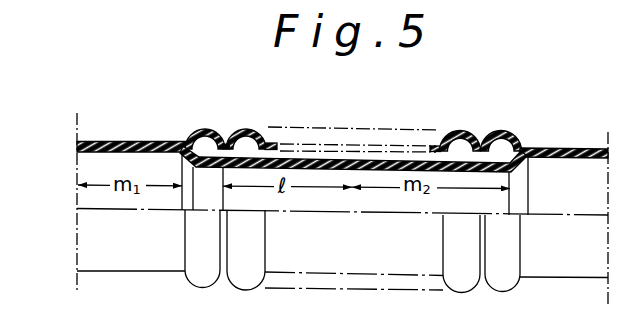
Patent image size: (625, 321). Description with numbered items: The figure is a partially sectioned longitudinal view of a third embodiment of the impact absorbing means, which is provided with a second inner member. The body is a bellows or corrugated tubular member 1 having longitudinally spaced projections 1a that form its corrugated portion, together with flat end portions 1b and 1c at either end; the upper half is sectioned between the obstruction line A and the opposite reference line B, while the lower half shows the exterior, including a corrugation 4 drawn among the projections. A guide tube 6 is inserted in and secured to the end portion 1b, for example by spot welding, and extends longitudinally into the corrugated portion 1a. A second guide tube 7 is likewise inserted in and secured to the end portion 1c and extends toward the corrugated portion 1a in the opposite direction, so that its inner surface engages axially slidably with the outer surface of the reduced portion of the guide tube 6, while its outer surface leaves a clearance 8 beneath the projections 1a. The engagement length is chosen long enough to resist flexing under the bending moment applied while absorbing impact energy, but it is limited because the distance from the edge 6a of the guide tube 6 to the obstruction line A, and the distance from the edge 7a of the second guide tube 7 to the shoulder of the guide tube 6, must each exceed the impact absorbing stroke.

The corrugated tubular member 1 is at (342, 121).
The projections 1a is at (231, 117).
The end portion 1b is at (554, 149).
The end portion 1c is at (143, 141).
The corrugation 4 is at (480, 150).
The guide tube 6 is at (330, 149).
The edge of the first guide tube 6a is at (185, 161).
The second guide tube 7 is at (205, 150).
The edge of the second guide tube 7a is at (352, 193).
The clearance 8 is at (226, 148).
The obstruction line A is at (76, 190).
The section reference point B is at (608, 200).